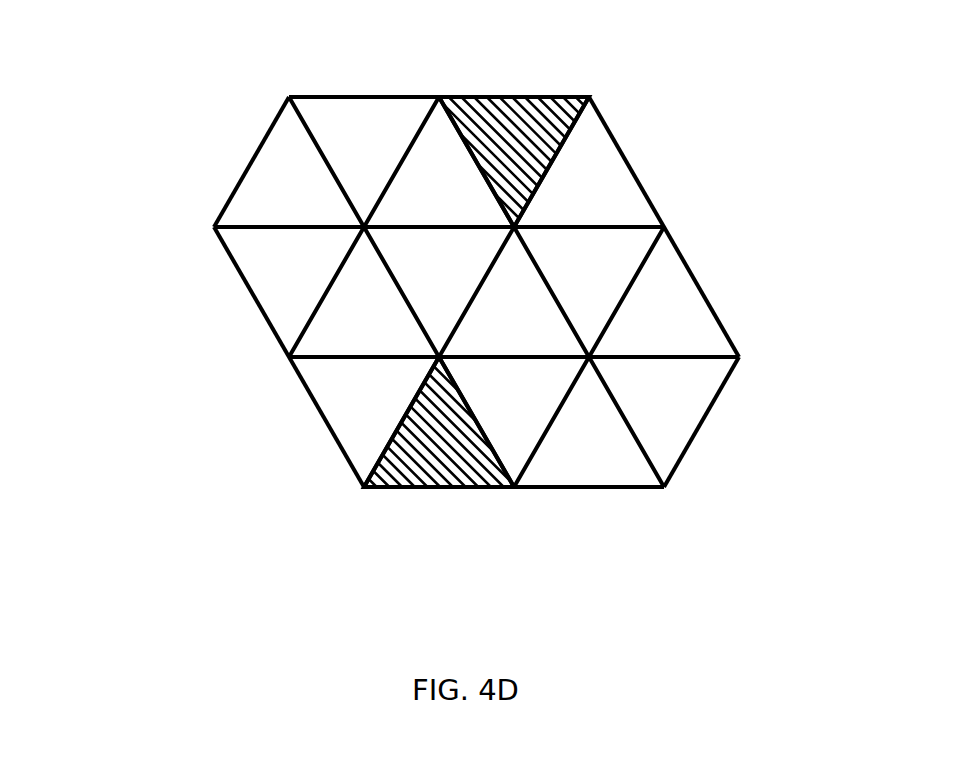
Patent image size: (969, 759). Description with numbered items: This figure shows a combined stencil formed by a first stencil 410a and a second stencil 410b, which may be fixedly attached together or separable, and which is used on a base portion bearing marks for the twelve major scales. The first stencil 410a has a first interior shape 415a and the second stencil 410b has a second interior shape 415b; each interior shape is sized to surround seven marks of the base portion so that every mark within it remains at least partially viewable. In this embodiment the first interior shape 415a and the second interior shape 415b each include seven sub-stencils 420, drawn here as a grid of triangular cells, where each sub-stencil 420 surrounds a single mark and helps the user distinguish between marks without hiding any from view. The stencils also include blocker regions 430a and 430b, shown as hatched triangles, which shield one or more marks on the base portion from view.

The first stencil 410a is at (253, 393).
The second stencil 410b is at (720, 262).
The first interior shape 415a is at (234, 151).
The second interior shape 415b is at (708, 455).
The sub-stencils 420 is at (271, 261).
The blocker region 430a is at (504, 117).
The blocker region 430b is at (455, 474).